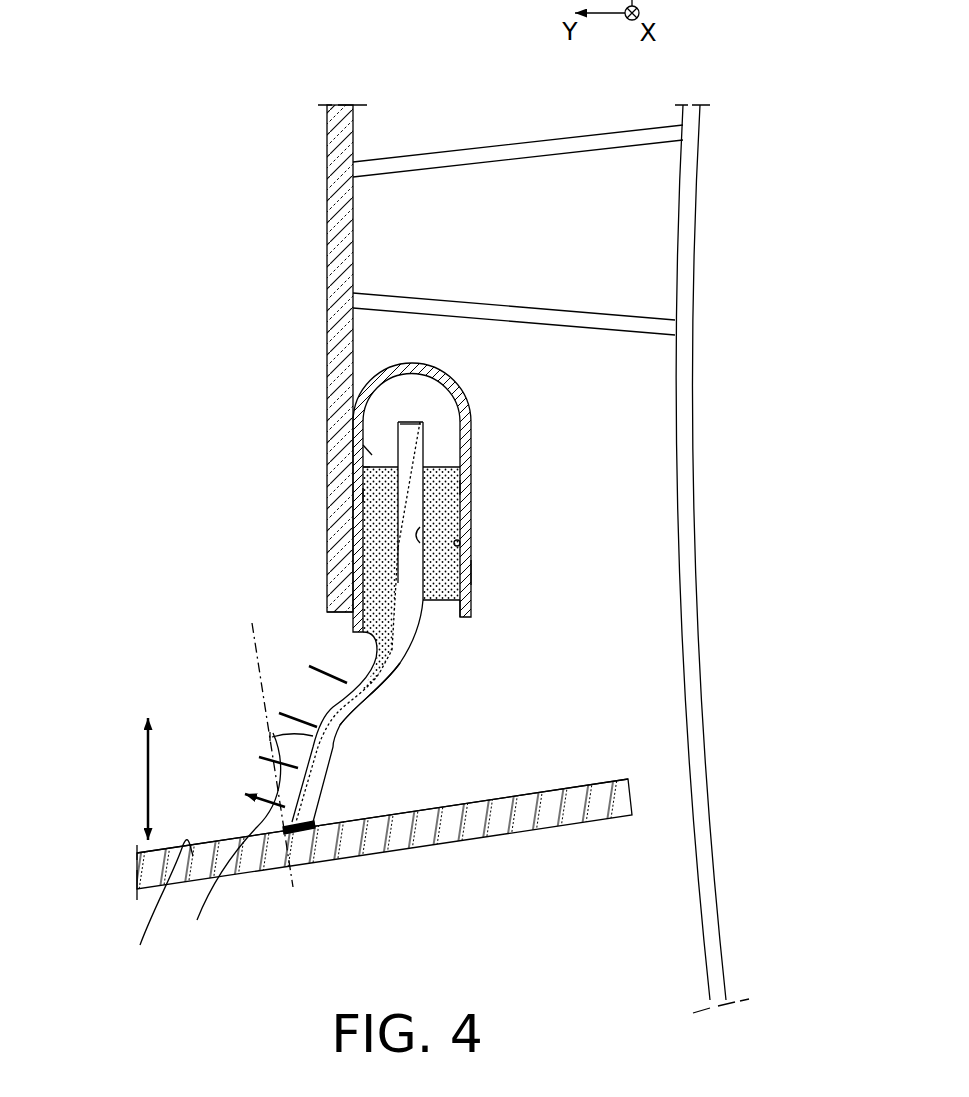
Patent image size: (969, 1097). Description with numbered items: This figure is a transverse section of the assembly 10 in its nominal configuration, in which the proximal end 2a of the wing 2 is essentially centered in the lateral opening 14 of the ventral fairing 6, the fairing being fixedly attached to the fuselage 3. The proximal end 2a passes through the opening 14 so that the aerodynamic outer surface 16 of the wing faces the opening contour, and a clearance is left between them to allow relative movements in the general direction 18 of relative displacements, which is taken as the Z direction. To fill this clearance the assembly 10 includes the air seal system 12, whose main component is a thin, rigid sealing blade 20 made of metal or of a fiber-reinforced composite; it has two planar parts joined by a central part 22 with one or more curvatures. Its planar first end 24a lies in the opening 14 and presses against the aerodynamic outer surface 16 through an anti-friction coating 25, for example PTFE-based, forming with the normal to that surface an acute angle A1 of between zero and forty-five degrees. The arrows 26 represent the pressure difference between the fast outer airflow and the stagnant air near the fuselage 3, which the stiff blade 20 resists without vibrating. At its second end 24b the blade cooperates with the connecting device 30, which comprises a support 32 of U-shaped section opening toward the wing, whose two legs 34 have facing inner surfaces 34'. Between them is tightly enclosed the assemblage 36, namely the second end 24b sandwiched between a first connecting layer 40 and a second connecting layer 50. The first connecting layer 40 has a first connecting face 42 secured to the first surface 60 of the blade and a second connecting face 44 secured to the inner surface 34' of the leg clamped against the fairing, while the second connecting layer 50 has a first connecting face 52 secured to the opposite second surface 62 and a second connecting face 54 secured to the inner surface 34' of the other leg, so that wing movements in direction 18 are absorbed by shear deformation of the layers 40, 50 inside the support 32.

The wing 2 is at (335, 848).
The proximal end of the wing 2a is at (393, 837).
The fuselage 3 is at (690, 158).
The ventral fairing 6 is at (325, 142).
The assembly 10 is at (228, 265).
The air seal system 12 is at (247, 727).
The lateral opening 14 is at (337, 623).
The aerodynamic outer surface of the wing 16 is at (149, 909).
The general direction of relative displacements 18 is at (148, 783).
The sealing blade 20 is at (360, 721).
The central part of the blade 22 is at (378, 697).
The first end of the blade 24a is at (285, 824).
The second end of the blade 24b is at (415, 478).
The anti-friction coating 25 is at (303, 832).
The arrows 26 is at (230, 840).
The connecting device 30 is at (478, 571).
The support 32 is at (448, 372).
The legs of the U 34 is at (474, 424).
The inner surface of the leg 34' is at (407, 533).
The assemblage 36 is at (412, 406).
The first connecting layer 40 is at (370, 553).
The first connecting face of the first connecting layer 42 is at (367, 470).
The second connecting face of the first connecting layer 44 is at (367, 495).
The second connecting layer 50 is at (462, 580).
The first connecting face of the second connecting layer 52 is at (418, 533).
The second connecting face of the second connecting layer 54 is at (470, 487).
The first surface of the blade 60 is at (370, 450).
The second surface of the blade 62 is at (428, 438).
The acute angle A1 is at (244, 755).